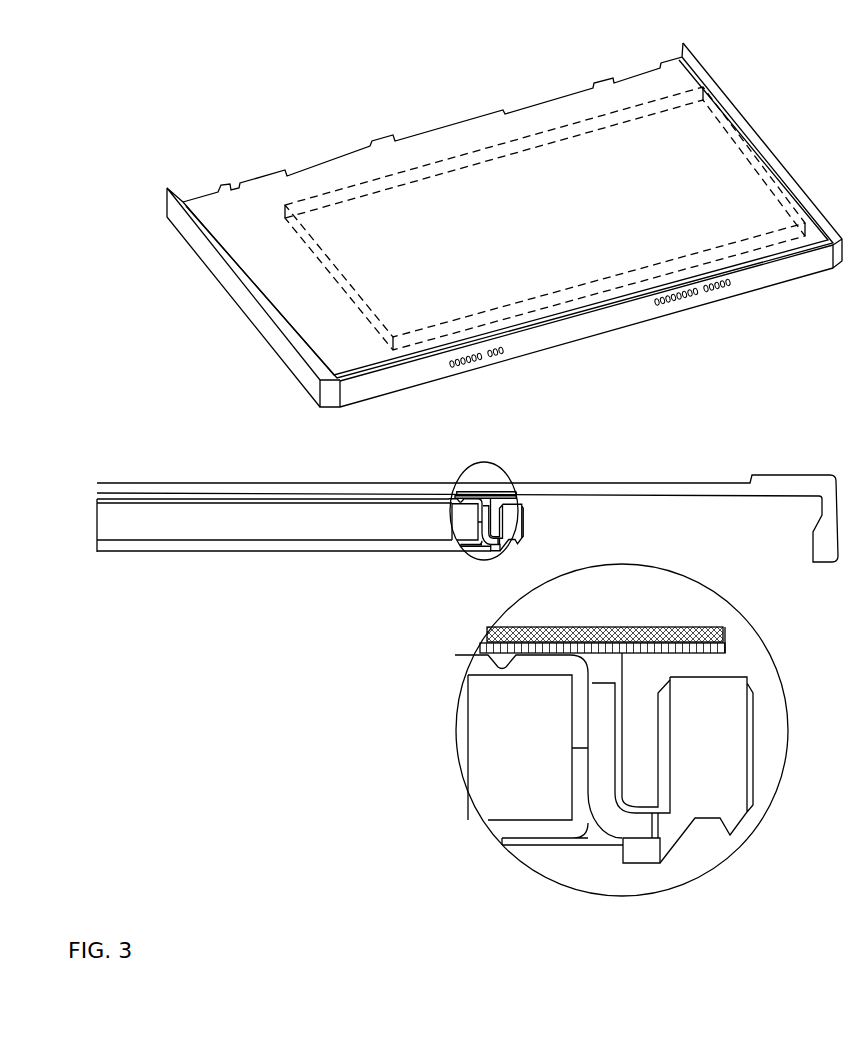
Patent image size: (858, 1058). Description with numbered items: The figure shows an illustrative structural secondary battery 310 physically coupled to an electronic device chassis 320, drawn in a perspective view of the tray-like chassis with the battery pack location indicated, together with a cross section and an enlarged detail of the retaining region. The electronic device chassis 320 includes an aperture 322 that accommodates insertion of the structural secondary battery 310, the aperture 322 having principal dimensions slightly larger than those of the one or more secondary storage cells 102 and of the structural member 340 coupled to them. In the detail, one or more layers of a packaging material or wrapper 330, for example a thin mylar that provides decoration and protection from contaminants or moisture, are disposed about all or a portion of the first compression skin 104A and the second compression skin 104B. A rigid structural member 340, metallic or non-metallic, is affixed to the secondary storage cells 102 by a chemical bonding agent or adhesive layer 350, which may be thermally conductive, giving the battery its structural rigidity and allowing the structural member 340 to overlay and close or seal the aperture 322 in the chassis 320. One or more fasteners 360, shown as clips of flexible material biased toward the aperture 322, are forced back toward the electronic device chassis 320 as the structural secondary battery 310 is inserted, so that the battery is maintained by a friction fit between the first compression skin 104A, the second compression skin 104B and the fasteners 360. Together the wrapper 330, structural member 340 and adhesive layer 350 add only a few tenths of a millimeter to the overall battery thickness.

The structural secondary battery 310 is at (718, 140).
The electronic device chassis 320 is at (228, 273).
The aperture 322 is at (625, 690).
The wrapper 330 is at (476, 654).
The structural member 340 is at (480, 643).
The adhesive layer 350 is at (487, 632).
The fasteners 360 is at (637, 827).
The secondary storage cells 102 is at (483, 729).
The first compression skin 104A is at (580, 678).
The second compression skin 104B is at (542, 827).